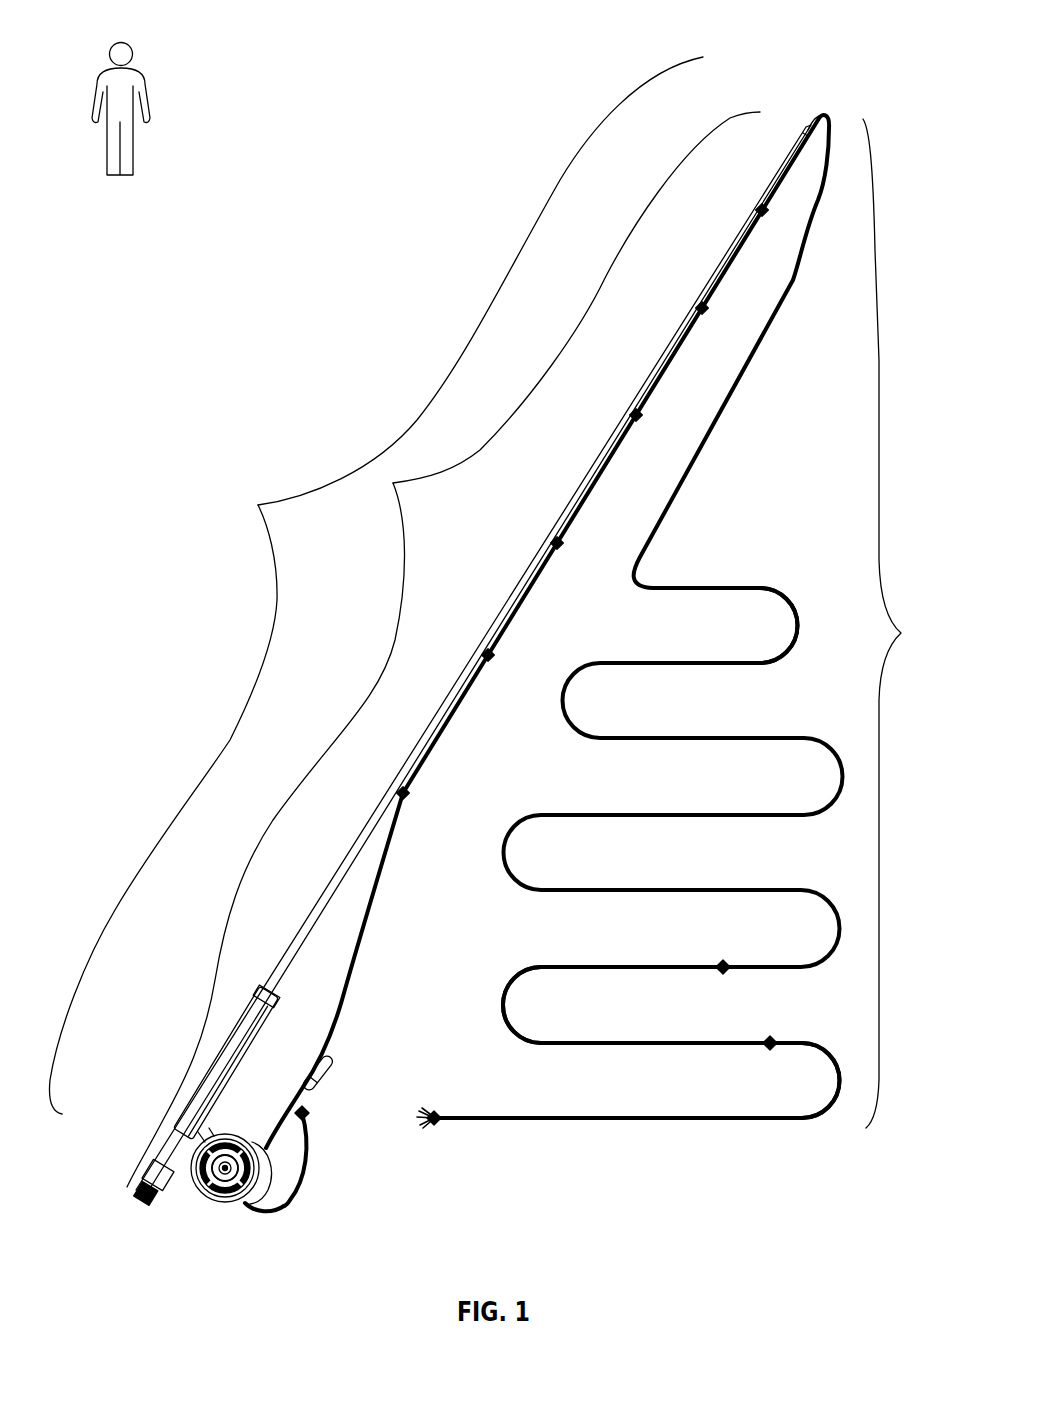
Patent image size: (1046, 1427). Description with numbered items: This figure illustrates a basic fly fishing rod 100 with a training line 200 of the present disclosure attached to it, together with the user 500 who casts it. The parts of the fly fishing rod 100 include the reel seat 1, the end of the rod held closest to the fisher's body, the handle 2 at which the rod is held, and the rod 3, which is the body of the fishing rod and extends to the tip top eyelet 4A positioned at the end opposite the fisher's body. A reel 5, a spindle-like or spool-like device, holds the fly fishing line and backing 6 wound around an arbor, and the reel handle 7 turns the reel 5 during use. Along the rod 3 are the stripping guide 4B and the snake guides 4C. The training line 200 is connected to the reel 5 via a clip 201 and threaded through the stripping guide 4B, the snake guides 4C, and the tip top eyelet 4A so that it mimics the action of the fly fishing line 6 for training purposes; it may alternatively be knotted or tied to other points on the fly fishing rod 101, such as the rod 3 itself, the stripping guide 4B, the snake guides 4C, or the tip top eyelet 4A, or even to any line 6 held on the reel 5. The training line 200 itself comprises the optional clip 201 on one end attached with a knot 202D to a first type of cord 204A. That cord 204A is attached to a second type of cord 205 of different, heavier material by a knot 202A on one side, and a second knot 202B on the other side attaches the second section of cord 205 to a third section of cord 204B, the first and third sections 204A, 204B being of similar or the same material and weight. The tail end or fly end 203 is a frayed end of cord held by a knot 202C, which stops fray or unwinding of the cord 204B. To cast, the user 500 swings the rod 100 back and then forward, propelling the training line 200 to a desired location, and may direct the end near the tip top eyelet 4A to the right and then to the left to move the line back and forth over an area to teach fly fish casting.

The user 500 is at (93, 47).
The fly fishing rod 100 is at (280, 226).
The fly fishing rod 101 is at (377, 585).
The rod 3 is at (473, 657).
The handle 2 is at (230, 1048).
The reel seat 1 is at (156, 1130).
The reel 5 is at (203, 1194).
The fly fishing line and backing 6 is at (237, 1142).
The reel handle 7 is at (251, 1143).
The training line 200 is at (595, 663).
The tip top eyelet 4A is at (824, 110).
The stripping guide 4B is at (407, 796).
The snake guides 4C is at (765, 214).
The clip 201 is at (329, 1086).
The knot 202A is at (726, 962).
The second knot 202B is at (772, 1038).
The knot 202C is at (440, 1123).
The knot 202D is at (306, 1117).
The tail end or fly end 203 is at (432, 1122).
The first type of cord 204A is at (745, 587).
The third section of cord 204B is at (746, 1121).
The second type of cord 205 is at (503, 1000).